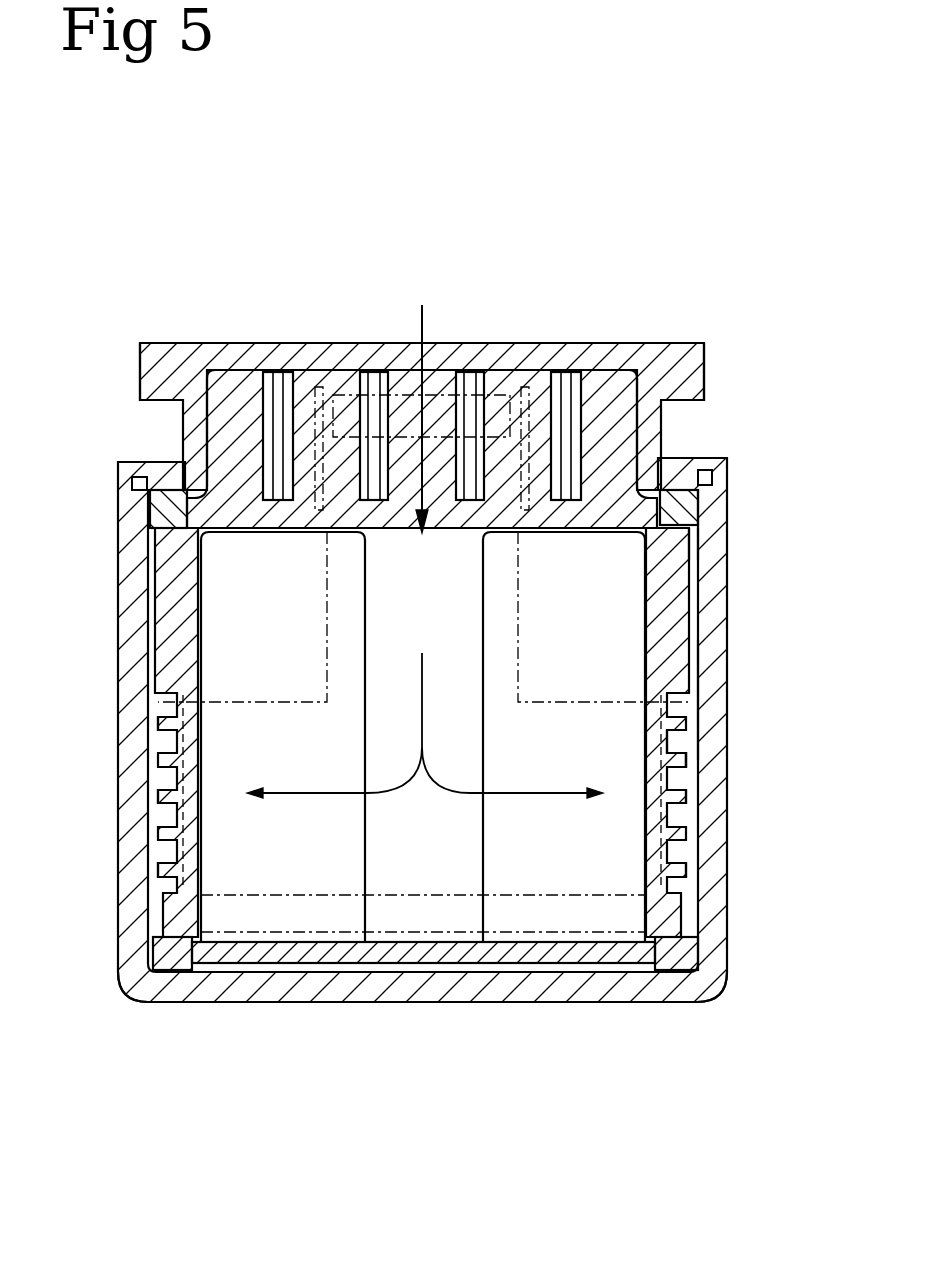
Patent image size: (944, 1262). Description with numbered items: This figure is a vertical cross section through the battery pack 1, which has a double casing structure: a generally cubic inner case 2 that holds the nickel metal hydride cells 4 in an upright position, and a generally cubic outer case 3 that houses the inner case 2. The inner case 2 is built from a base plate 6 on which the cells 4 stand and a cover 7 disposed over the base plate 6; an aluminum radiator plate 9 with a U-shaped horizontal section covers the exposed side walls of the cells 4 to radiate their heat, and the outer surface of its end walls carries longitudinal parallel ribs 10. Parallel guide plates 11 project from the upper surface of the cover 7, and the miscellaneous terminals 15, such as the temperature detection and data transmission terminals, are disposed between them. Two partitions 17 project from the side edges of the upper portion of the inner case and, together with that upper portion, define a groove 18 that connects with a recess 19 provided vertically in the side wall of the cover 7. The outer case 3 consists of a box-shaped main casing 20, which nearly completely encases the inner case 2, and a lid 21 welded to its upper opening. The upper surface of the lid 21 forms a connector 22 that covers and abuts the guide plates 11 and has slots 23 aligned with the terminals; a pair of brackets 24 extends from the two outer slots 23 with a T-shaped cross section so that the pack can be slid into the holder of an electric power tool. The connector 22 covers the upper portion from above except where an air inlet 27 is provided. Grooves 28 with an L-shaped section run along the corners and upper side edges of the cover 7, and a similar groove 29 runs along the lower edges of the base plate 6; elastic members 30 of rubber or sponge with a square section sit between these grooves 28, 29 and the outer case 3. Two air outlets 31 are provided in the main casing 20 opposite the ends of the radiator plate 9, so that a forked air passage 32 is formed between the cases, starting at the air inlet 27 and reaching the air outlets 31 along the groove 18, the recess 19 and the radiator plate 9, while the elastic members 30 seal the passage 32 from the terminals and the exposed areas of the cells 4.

The battery pack 1 is at (712, 320).
The inner case 2 is at (690, 635).
The outer case 3 is at (742, 696).
The nickel metal hydride cells 4 is at (332, 920).
The base plate 6 is at (542, 952).
The cover 7 is at (673, 585).
The radiator plate 9 is at (650, 742).
The longitudinal parallel ribs 10 is at (180, 722).
The guide plates 11 is at (232, 387).
The miscellaneous terminals 15 is at (277, 370).
The partitions 17 is at (323, 387).
The groove 18 is at (398, 468).
The recess 19 is at (398, 618).
The main casing 20 is at (720, 930).
The lid 21 is at (710, 480).
The connector 22 is at (617, 352).
The slots 23 is at (375, 355).
The brackets 24 is at (148, 368).
The air inlet 27 is at (432, 370).
The grooves 28 is at (685, 545).
The groove 29 is at (653, 953).
The elastic members 30 is at (152, 515).
The air outlets 31 is at (165, 800).
The forked air passage 32 is at (467, 800).